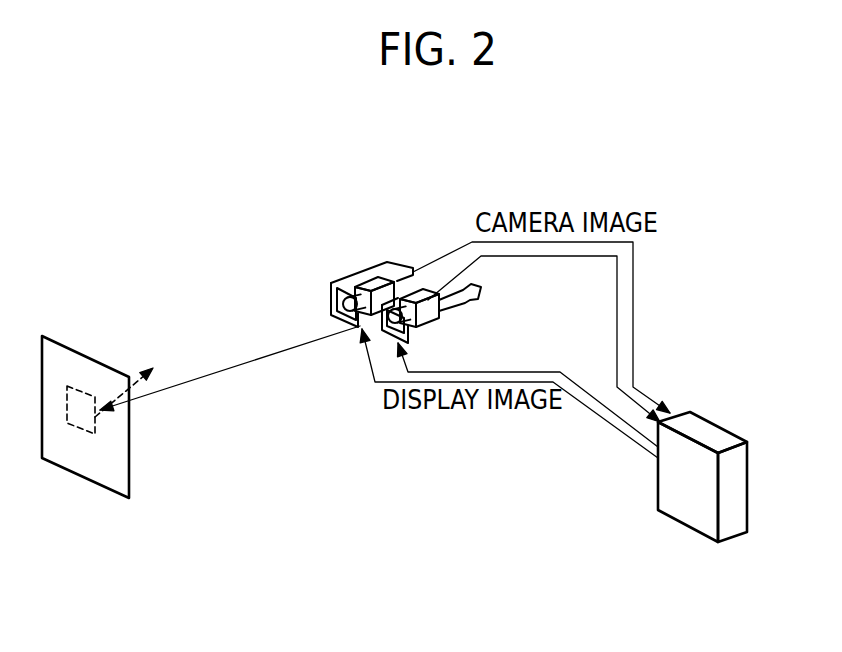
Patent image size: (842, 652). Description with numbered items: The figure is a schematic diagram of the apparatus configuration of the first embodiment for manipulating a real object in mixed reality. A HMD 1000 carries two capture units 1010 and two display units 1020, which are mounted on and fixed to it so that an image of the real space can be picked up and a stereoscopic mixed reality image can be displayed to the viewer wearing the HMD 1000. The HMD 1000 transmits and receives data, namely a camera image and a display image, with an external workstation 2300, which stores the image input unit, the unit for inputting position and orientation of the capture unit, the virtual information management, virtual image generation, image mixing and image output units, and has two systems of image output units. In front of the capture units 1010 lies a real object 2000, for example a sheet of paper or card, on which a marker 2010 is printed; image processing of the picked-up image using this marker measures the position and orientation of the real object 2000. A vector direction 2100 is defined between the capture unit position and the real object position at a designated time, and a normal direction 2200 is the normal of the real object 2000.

The HMD 1000 is at (468, 300).
The capture unit 1010 is at (418, 290).
The display unit 1020 is at (332, 297).
The real object 2000 is at (58, 358).
The marker 2010 is at (92, 418).
The vector direction 2100 is at (232, 373).
The normal direction 2200 is at (132, 377).
The workstation 2300 is at (693, 532).